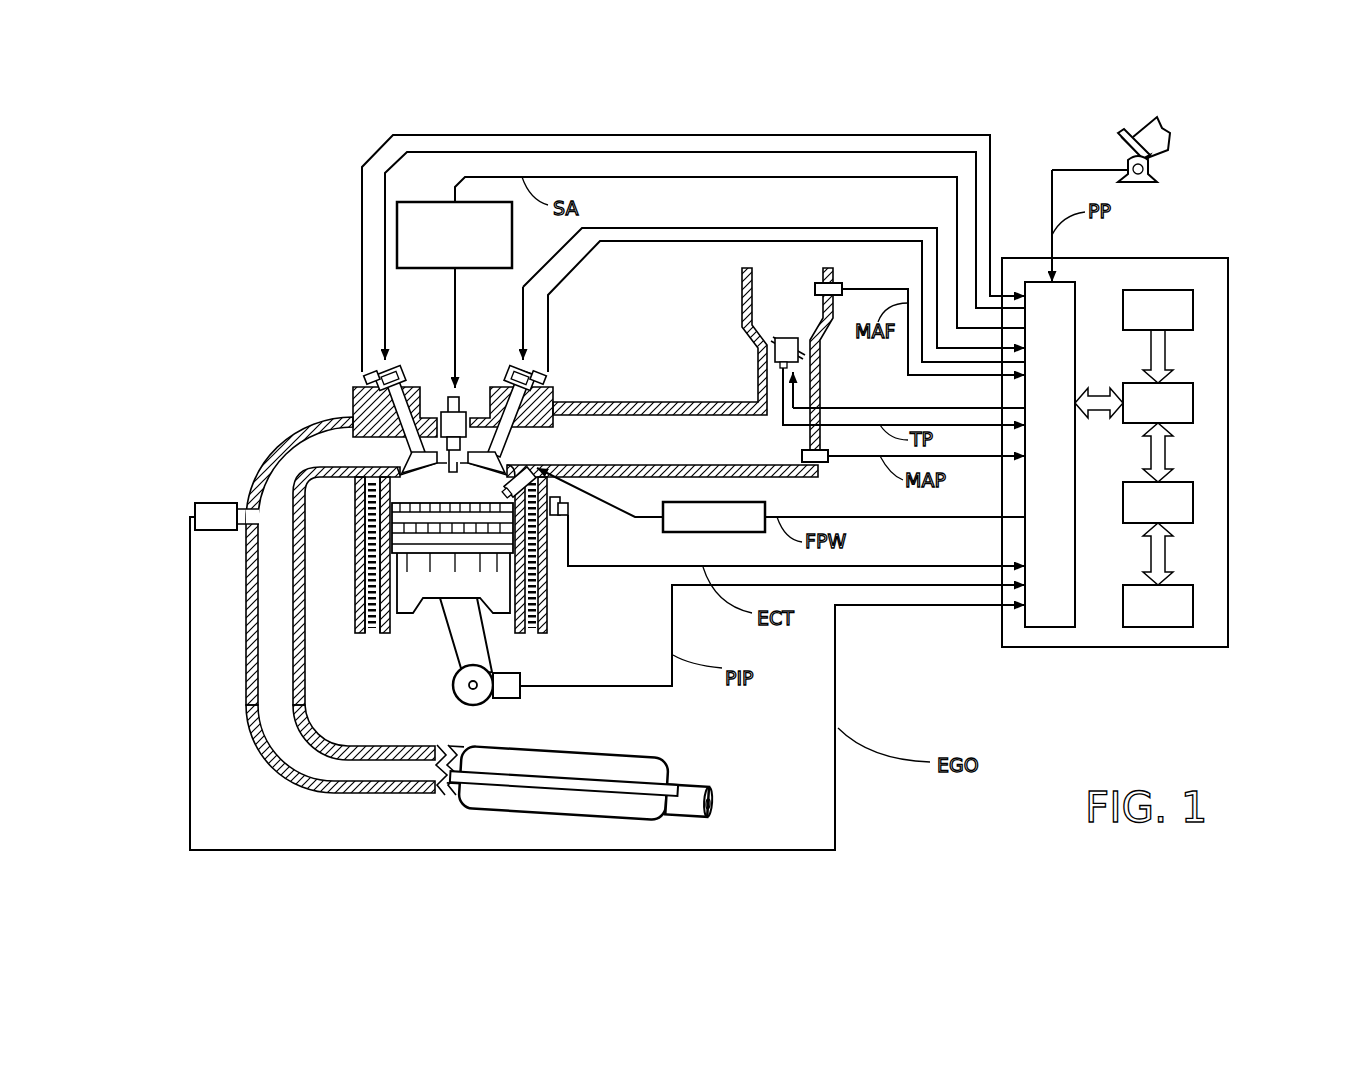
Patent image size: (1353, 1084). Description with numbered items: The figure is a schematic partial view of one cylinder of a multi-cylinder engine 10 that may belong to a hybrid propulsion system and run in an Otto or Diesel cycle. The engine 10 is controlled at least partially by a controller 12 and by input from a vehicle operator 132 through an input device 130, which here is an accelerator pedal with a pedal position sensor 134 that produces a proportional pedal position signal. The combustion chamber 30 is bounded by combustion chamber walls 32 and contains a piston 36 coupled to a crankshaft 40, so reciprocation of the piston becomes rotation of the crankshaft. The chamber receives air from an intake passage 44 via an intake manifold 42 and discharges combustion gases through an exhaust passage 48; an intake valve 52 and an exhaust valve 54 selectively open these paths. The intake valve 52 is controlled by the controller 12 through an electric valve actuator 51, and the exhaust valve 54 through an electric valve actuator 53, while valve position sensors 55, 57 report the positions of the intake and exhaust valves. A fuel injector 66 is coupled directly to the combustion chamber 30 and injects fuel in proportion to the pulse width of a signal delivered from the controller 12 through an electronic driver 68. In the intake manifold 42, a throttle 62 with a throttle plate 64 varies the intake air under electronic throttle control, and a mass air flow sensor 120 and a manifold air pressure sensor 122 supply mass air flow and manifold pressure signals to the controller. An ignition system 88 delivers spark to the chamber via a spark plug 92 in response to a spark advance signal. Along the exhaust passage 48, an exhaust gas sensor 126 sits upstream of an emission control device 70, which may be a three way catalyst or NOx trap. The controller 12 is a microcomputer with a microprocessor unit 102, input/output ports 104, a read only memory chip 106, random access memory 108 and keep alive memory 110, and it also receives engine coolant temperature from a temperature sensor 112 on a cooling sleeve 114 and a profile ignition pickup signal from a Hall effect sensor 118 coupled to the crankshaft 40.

The engine 10 is at (290, 340).
The controller 12 is at (1215, 262).
The combustion chamber 30 is at (452, 483).
The combustion chamber walls 32 is at (397, 617).
The piston 36 is at (437, 585).
The crankshaft 40 is at (462, 702).
The intake manifold 42 is at (798, 316).
The intake passage 44 is at (733, 455).
The exhaust passage 48 is at (334, 458).
The electric valve actuator 51 is at (508, 368).
The intake valve 52 is at (495, 452).
The electric valve actuator 53 is at (397, 368).
The exhaust valve 54 is at (407, 458).
The valve position sensor 55 is at (536, 372).
The valve position sensor 57 is at (372, 372).
The throttle 62 is at (806, 345).
The throttle plate 64 is at (771, 343).
The fuel injector 66 is at (560, 506).
The electronic driver 68 is at (692, 532).
The emission control device 70 is at (630, 752).
The ignition system 88 is at (410, 202).
The spark plug 92 is at (457, 398).
The microprocessor unit 102 is at (1195, 396).
The input/output ports 104 is at (1077, 290).
The read only memory chip 106 is at (1195, 308).
The random access memory 108 is at (1195, 501).
The keep alive memory 110 is at (1195, 604).
The temperature sensor 112 is at (572, 514).
The cooling sleeve 114 is at (547, 588).
The Hall effect sensor 118 is at (510, 700).
The mass air flow sensor 120 is at (832, 284).
The manifold air pressure sensor 122 is at (822, 464).
The exhaust gas sensor 126 is at (197, 506).
The input device 130 is at (1124, 144).
The vehicle operator 132 is at (1165, 133).
The pedal position sensor 134 is at (1160, 170).